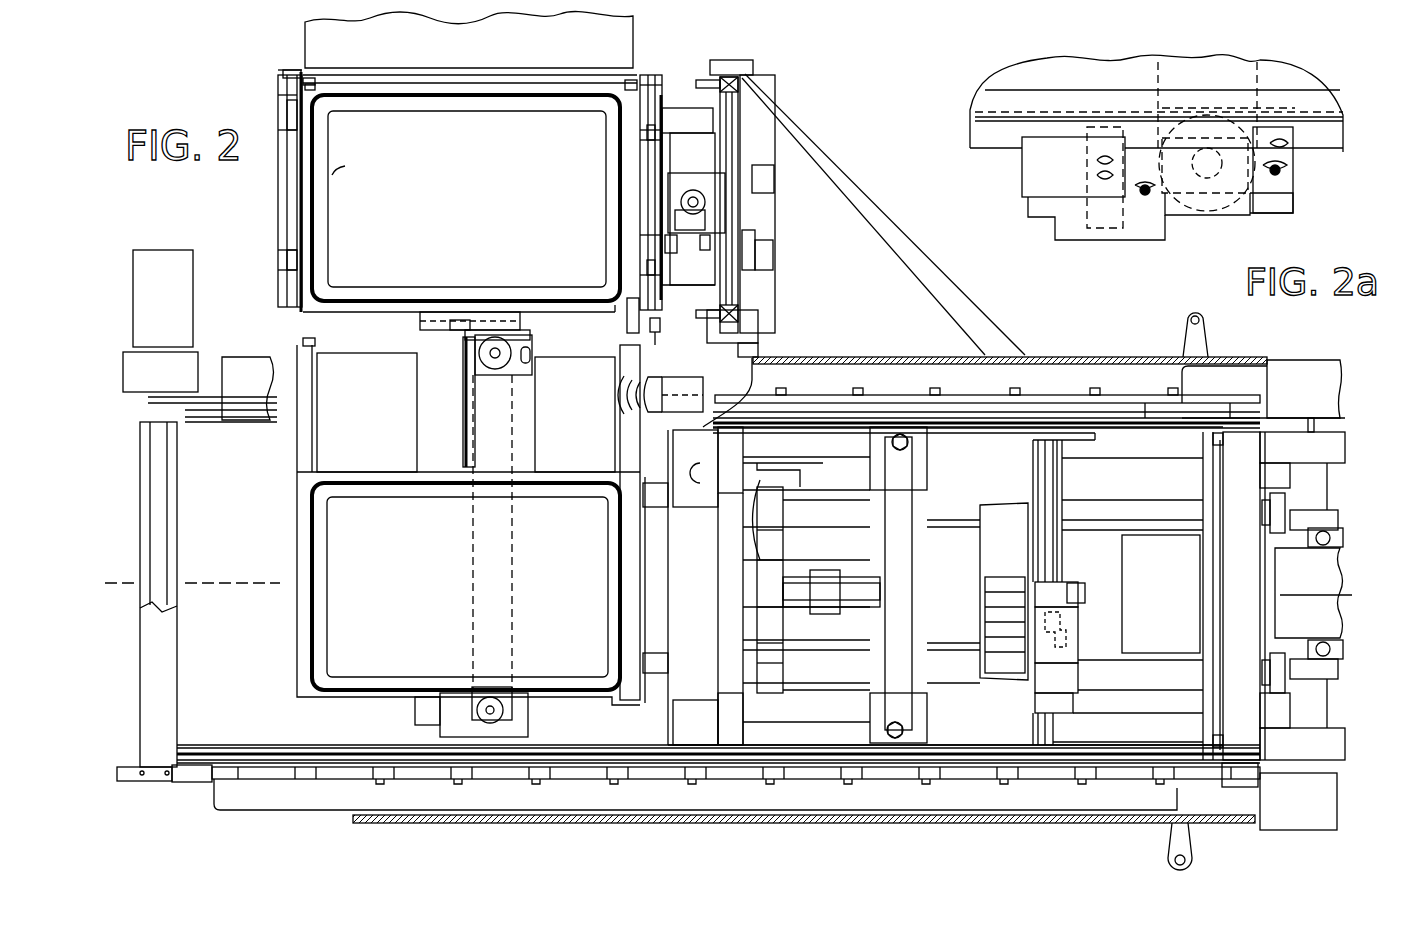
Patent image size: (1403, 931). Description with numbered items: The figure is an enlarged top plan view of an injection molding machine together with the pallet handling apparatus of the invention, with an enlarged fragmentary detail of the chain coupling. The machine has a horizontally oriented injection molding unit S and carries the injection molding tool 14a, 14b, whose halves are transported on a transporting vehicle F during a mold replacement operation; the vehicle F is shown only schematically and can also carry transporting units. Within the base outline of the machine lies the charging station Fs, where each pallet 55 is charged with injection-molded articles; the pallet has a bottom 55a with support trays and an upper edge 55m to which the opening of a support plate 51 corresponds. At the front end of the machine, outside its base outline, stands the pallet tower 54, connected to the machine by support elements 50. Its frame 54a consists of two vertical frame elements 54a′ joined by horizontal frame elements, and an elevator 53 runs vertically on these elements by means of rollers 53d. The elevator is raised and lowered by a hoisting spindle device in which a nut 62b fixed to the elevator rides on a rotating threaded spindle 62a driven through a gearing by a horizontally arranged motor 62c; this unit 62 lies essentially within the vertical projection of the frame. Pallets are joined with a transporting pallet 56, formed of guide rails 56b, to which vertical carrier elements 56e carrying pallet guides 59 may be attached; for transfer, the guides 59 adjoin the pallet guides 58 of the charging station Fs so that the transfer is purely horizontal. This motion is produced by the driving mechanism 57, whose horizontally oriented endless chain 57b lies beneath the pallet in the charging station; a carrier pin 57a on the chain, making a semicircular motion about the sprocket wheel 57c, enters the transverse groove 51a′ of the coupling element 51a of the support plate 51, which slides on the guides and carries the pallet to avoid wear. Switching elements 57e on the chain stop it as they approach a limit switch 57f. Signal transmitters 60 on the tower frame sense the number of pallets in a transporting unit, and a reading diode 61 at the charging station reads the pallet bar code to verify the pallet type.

In FIG. 2, the transporting vehicle F is at (506, 55).
In FIG. 2, the charging station Fs is at (297, 652).
In FIG. 2, the injection molding unit S is at (732, 540).
In FIG. 2, the injection molding tool 14a is at (965, 605).
In FIG. 2, the injection molding tool 14b is at (1186, 613).
In FIG. 2, the support elements 50 is at (745, 338).
In FIG. 2, the support plate 51 is at (445, 90).
In FIG. 2a, the support plate 51 is at (990, 135).
In FIG. 2, the coupling element 51a is at (485, 312).
In FIG. 2a, the coupling element 51a is at (1055, 167).
In FIG. 2, the transverse groove 51a′ is at (470, 330).
In FIG. 2a, the transverse groove 51a′ is at (1275, 205).
In FIG. 2, the elevator 53 is at (700, 100).
In FIG. 2, the rollers 53d is at (700, 85).
In FIG. 2, the pallet tower 54 is at (272, 83).
In FIG. 2, the frame 54a is at (758, 64).
In FIG. 2, the vertical frame elements 54a′ is at (728, 77).
In FIG. 2a, the pallet 55 is at (1095, 70).
In FIG. 2, the bottom 55a is at (482, 221).
In FIG. 2, the upper edge 55m is at (333, 196).
In FIG. 2, the transporting pallet 56 is at (278, 186).
In FIG. 2, the guide rails 56b is at (312, 78).
In FIG. 2, the vertical carrier elements 56e is at (290, 103).
In FIG. 2, the driving mechanism 57 is at (460, 405).
In FIG. 2a, the carrier pin 57a is at (1147, 196).
In FIG. 2, the endless chain 57b is at (515, 424).
In FIG. 2a, the endless chain 57b is at (1163, 72).
In FIG. 2a, the sprocket wheel 57c is at (1200, 205).
In FIG. 2a, the switching elements 57e is at (1283, 172).
In FIG. 2a, the limit switch 57f is at (1280, 145).
In FIG. 2, the pallet guides 58 is at (320, 440).
In FIG. 2, the pallet guides 59 is at (318, 92).
In FIG. 2, the signal transmitters 60 is at (656, 330).
In FIG. 2, the reading diode 61 is at (655, 378).
In FIG. 2, the lifting mechanism 62 is at (662, 198).
In FIG. 2, the threaded spindle 62a is at (720, 212).
In FIG. 2, the nut 62b is at (700, 195).
In FIG. 2, the motor 62c is at (690, 225).